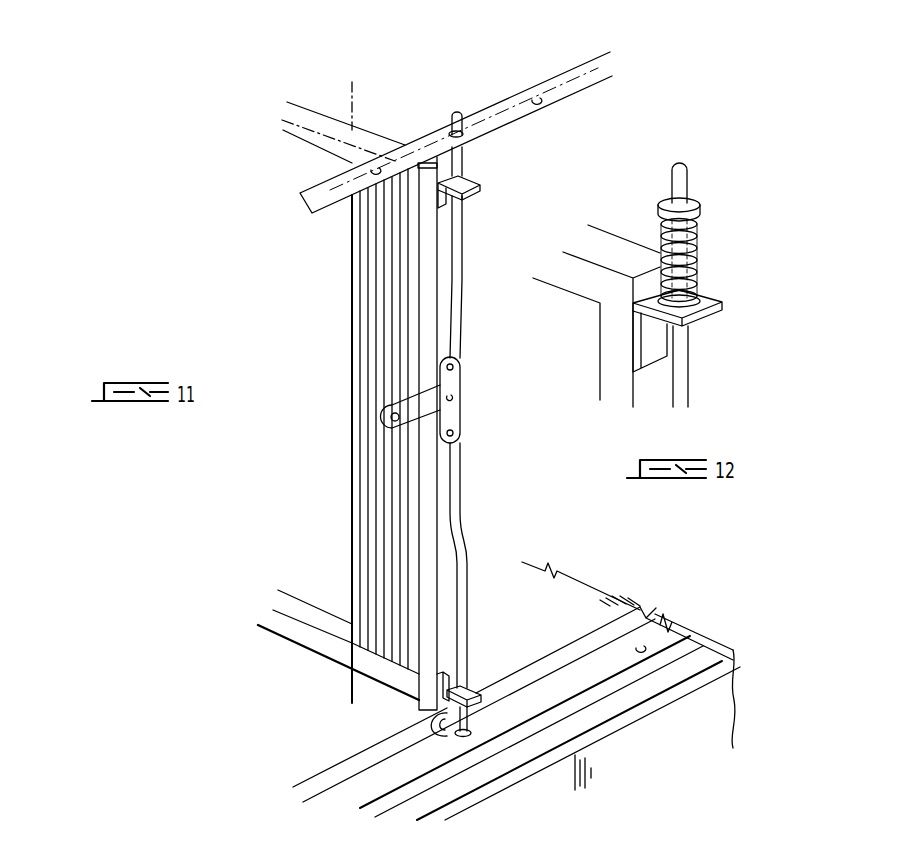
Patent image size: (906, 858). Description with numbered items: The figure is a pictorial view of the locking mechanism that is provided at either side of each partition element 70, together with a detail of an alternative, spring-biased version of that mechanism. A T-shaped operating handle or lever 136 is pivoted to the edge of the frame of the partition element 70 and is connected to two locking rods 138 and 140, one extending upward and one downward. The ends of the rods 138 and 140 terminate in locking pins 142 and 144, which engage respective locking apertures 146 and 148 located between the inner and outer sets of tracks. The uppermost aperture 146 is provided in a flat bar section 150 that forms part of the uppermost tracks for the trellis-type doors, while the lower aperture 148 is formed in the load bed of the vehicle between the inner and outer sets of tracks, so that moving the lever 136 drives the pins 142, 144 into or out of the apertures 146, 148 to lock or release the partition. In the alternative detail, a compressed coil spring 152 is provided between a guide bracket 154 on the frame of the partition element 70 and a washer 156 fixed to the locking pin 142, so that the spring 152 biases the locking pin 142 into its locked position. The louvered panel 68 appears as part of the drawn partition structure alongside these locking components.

In FIG. 11, the partition element 70 is at (342, 328).
In FIG. 11, the louvered panel 68 is at (353, 545).
In FIG. 11, the T-shaped operating handle or lever 136 is at (422, 420).
In FIG. 11, the locking rod 138 is at (462, 292).
In FIG. 11, the locking rod 140 is at (470, 598).
In FIG. 11, the locking pin 142 is at (454, 108).
In FIG. 12, the locking pin 142 is at (679, 160).
In FIG. 11, the locking pin 144 is at (470, 724).
In FIG. 11, the locking aperture 146 is at (538, 106).
In FIG. 11, the locking aperture 148 is at (565, 686).
In FIG. 11, the flat bar section 150 is at (574, 90).
In FIG. 12, the compressed coil spring 152 is at (707, 263).
In FIG. 12, the guide bracket 154 is at (703, 318).
In FIG. 12, the washer 156 is at (707, 210).